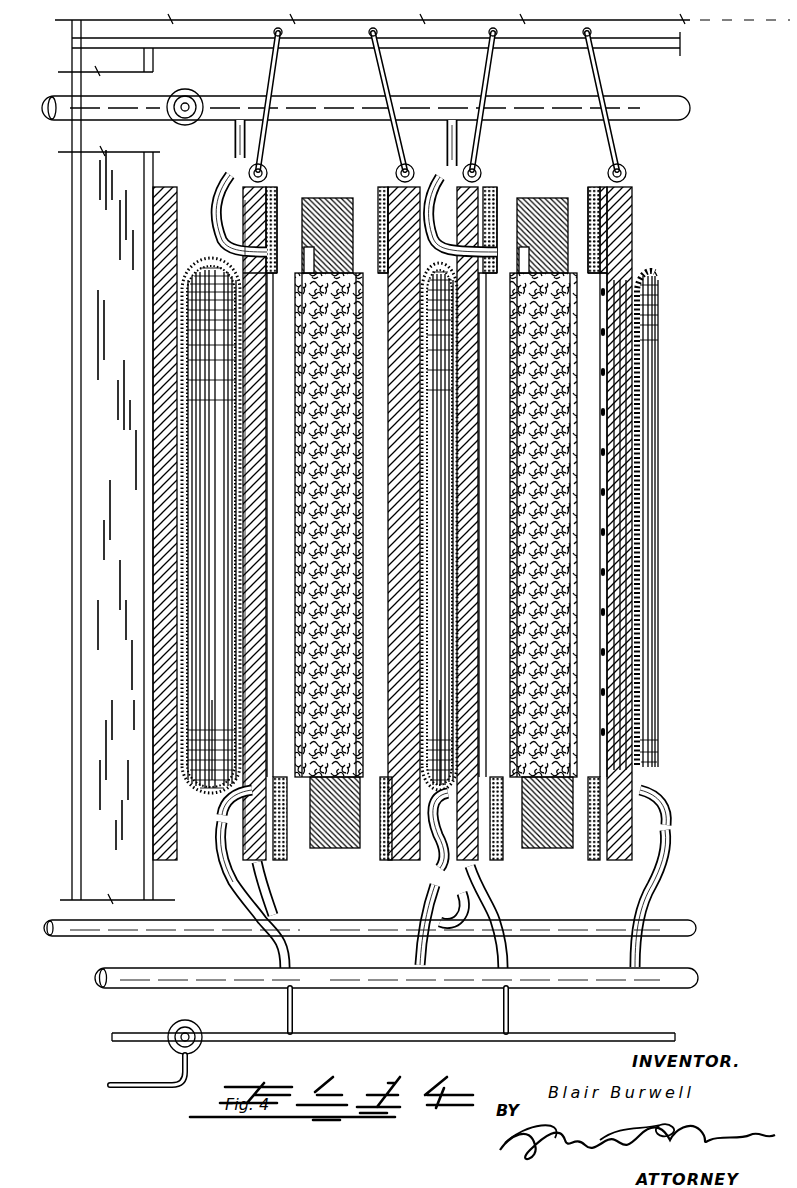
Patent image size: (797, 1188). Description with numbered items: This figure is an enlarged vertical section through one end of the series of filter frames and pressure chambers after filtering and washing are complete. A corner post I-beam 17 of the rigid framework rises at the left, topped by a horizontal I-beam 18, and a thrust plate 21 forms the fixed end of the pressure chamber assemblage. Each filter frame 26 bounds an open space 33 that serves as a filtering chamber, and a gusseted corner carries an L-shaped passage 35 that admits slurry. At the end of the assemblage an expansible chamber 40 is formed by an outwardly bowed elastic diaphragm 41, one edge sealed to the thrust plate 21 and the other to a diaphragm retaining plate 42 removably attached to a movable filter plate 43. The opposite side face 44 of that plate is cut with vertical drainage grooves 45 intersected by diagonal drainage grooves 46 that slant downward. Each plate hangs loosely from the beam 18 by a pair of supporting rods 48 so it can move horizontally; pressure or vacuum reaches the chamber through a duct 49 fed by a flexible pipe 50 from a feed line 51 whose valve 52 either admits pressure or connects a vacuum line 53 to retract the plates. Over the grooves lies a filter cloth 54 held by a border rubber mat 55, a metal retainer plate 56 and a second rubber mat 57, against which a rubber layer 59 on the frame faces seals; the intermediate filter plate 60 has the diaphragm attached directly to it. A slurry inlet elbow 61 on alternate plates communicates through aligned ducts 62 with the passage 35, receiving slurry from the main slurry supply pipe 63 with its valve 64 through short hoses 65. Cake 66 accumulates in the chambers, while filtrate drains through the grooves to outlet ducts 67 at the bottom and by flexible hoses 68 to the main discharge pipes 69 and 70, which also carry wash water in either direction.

The corner post I-beam 17 is at (92, 288).
The horizontal I-beam 18 is at (448, 42).
The thrust plate 21 is at (160, 358).
The filter frame 26 is at (312, 198).
The open space 33 is at (315, 392).
The L-shaped passage 35 is at (310, 250).
The expansible chamber 40 is at (226, 406).
The elastic diaphragm 41 is at (195, 297).
The diaphragm retaining plate 42 is at (243, 437).
The filter plate 43 is at (250, 470).
The filter plate side face 44 is at (265, 490).
The vertical drainage groove 45 is at (258, 577).
The diagonal drainage groove 46 is at (255, 527).
The supporting rod 48 is at (587, 52).
The pressure duct 49 is at (240, 684).
The flexible pipe 50 is at (278, 893).
The feed line 51 is at (138, 1033).
The valve 52 is at (203, 1028).
The vacuum line 53 is at (146, 1095).
The filter cloth 54 is at (257, 367).
The border rubber mat 55 is at (256, 188).
The metal retainer plate 56 is at (272, 188).
The second rubber mat 57 is at (277, 190).
The rubber layer 59 is at (352, 200).
The filter plate 60 is at (418, 447).
The slurry inlet elbow 61 is at (218, 241).
The aligned duct 62 is at (434, 525).
The main slurry supply pipe 63 is at (650, 100).
The valve 64 is at (198, 93).
The hose 65 is at (213, 172).
The cake 66 is at (436, 525).
The outlet duct 67 is at (255, 808).
The flexible hose 68 is at (216, 866).
The main discharge pipe 69 is at (155, 920).
The main discharge pipe 70 is at (136, 976).